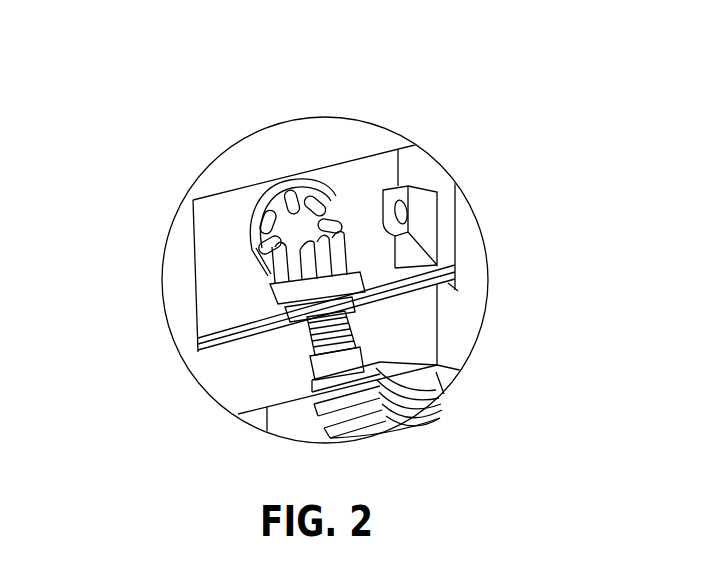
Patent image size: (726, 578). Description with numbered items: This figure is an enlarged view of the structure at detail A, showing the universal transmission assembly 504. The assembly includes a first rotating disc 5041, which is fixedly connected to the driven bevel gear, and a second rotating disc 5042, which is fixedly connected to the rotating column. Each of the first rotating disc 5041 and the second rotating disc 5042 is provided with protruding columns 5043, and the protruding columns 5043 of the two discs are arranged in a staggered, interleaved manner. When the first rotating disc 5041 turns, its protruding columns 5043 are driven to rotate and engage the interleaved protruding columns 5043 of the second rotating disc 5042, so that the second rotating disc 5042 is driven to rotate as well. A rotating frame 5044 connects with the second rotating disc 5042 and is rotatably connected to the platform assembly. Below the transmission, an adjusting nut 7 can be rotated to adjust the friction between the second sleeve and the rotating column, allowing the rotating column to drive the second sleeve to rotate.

The detail A is at (360, 117).
The universal transmission assembly 504 is at (230, 257).
The first rotating disc 5041 is at (252, 208).
The second rotating disc 5042 is at (292, 300).
The protruding columns 5043 is at (296, 180).
The rotating frame 5044 is at (432, 252).
The adjusting nut 7 is at (420, 378).